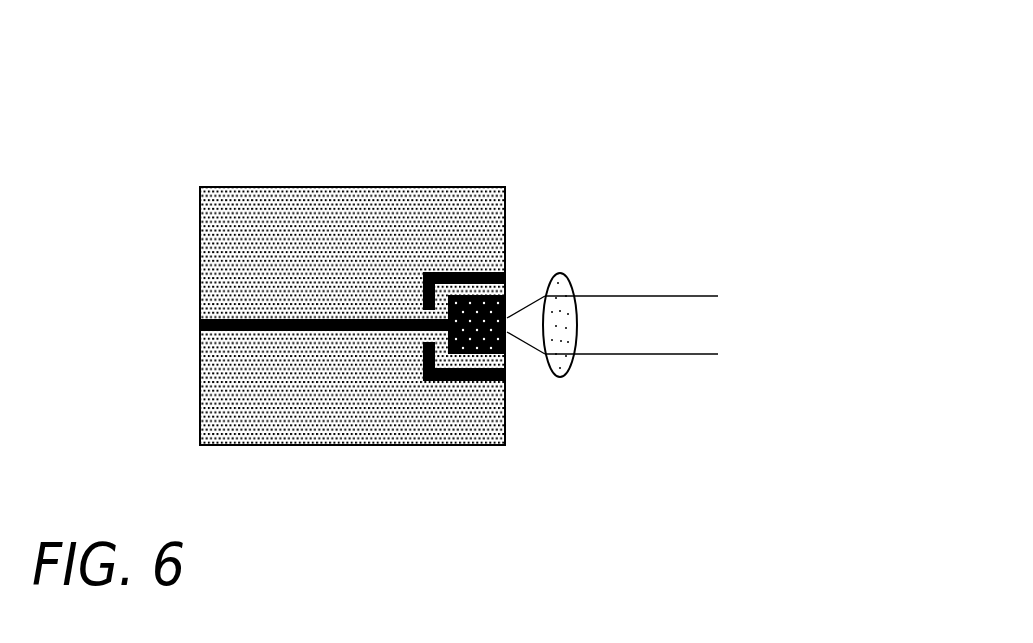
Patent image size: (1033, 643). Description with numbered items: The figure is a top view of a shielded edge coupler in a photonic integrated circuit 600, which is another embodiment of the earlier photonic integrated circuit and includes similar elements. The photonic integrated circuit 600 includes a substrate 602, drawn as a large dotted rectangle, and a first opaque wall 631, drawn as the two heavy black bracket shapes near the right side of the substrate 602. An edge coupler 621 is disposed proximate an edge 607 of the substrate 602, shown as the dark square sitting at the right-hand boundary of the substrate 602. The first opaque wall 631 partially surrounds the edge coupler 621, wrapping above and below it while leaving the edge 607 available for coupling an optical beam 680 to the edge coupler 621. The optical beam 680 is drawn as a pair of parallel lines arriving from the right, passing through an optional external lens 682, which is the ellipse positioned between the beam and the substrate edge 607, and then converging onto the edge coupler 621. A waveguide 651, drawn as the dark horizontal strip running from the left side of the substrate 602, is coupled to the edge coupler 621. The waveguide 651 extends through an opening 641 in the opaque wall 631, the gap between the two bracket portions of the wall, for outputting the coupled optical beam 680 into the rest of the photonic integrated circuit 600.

The photonic integrated circuit 600 is at (641, 51).
The substrate 602 is at (290, 188).
The waveguide 651 is at (298, 332).
The opening 641 is at (419, 340).
The first opaque wall 631 is at (472, 271).
The edge coupler 621 is at (507, 303).
The external lens 682 is at (571, 376).
The optical beam 680 is at (670, 327).
The edge 607 is at (514, 362).